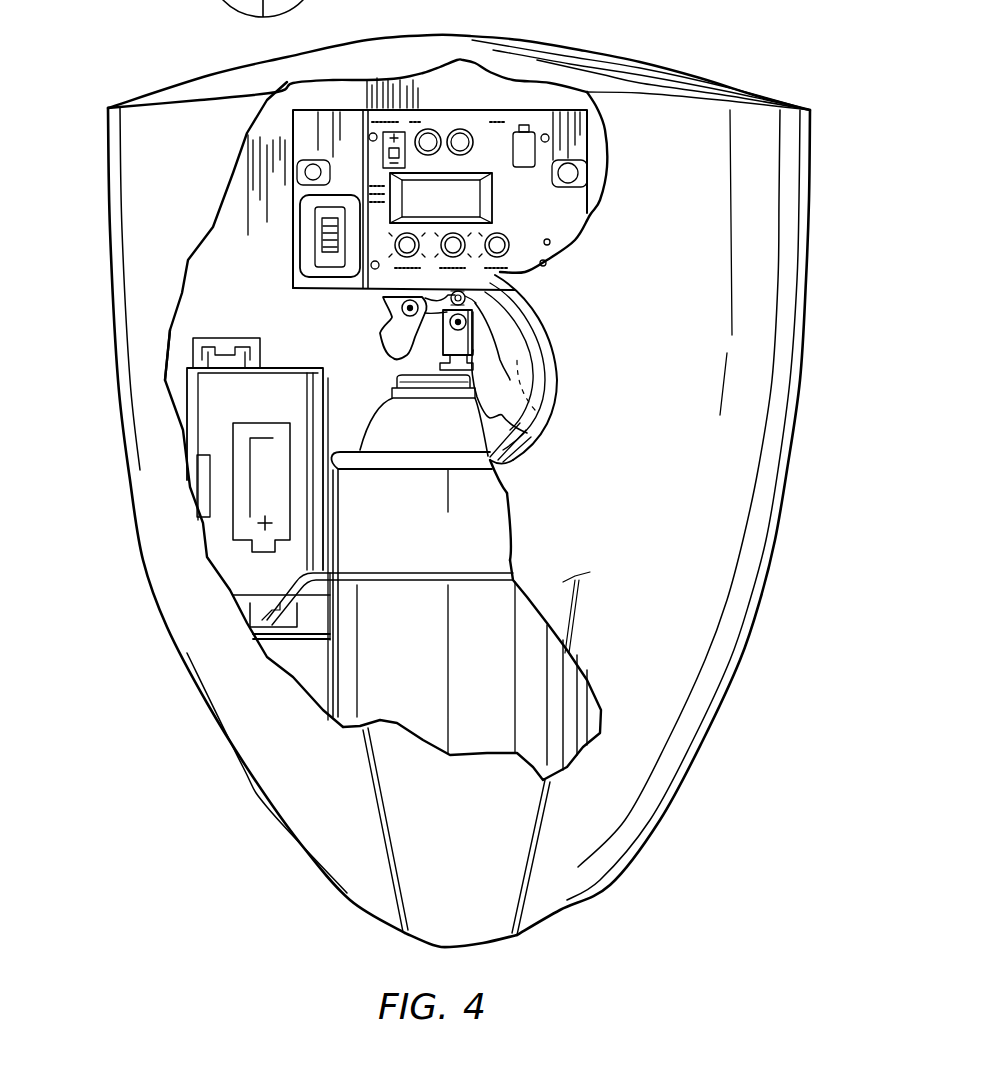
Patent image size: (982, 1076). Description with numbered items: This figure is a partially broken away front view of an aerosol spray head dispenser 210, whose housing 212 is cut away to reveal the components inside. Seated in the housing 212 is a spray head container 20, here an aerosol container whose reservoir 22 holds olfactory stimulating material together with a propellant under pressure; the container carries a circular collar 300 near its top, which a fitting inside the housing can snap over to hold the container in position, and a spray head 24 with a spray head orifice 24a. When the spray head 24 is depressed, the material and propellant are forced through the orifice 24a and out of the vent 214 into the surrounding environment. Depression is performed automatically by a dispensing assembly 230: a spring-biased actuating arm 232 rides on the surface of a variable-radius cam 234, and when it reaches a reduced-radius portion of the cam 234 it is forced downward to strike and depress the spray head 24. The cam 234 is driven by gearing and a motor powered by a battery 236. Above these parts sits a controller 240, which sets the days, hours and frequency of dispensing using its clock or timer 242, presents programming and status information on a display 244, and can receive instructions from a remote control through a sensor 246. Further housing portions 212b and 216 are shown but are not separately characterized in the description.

The spray head container 20 is at (363, 427).
The reservoir 22 is at (453, 547).
The spray head 24 is at (500, 367).
The spray head orifice 24a is at (512, 323).
The dispenser 210 is at (716, 62).
The housing 212 is at (140, 530).
The housing interior wall 212b is at (338, 360).
The vent 214 is at (520, 423).
The housing base portion 216 is at (313, 680).
The dispensing assembly 230 is at (490, 290).
The actuating arm 232 is at (428, 357).
The cam 234 is at (380, 303).
The battery 236 is at (257, 423).
The controller 240 is at (601, 145).
The clock or timer 242 is at (493, 197).
The display 244 is at (478, 148).
The sensor 246 is at (442, 138).
The collar 300 is at (383, 405).